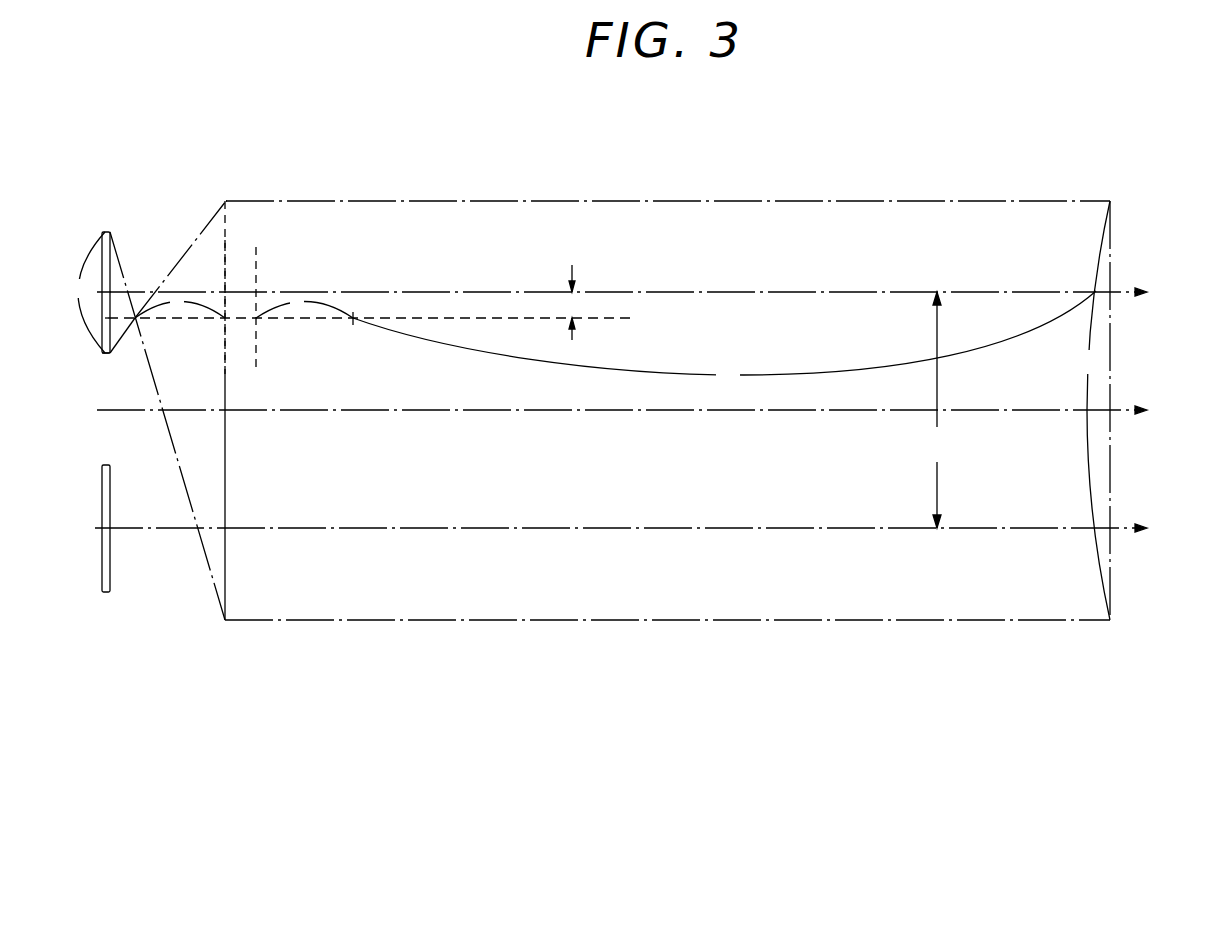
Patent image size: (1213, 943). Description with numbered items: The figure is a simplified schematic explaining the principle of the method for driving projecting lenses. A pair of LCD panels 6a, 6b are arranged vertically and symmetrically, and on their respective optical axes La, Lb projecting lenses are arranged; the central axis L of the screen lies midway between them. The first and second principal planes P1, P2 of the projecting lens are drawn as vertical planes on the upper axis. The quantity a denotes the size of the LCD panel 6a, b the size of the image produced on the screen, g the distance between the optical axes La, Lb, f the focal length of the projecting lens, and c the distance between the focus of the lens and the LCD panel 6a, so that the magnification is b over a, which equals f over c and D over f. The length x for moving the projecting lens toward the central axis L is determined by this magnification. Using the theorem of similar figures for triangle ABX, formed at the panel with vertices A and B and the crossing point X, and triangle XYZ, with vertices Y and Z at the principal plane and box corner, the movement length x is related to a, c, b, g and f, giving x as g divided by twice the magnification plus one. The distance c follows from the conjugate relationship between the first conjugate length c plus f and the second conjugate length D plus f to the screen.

The LCD panel 6a is at (106, 232).
The LCD panel 6b is at (104, 592).
The size of LCD panel a is at (87, 292).
The size of image on screen b is at (1093, 410).
The distance between focus of projecting lens and LCD panel c is at (118, 306).
The focal length of projecting lens f is at (244, 309).
The movement length of projecting lens x is at (581, 302).
The distance between optical axes g is at (937, 410).
The second conjugate length minus focal length D is at (724, 339).
The vertex of triangle ABX A is at (103, 369).
The vertex of triangle ABX B is at (96, 318).
The common vertex of triangles ABX and XYZ X is at (168, 410).
The vertex of triangle XYZ Y is at (245, 331).
The vertex of triangle XYZ Z is at (212, 192).
The first principal plane P1 is at (224, 364).
The second principal plane P2 is at (255, 365).
The optical axis of LCD panel 6a La is at (640, 292).
The central axis of screen L is at (632, 411).
The optical axis of LCD panel 6b Lb is at (639, 528).